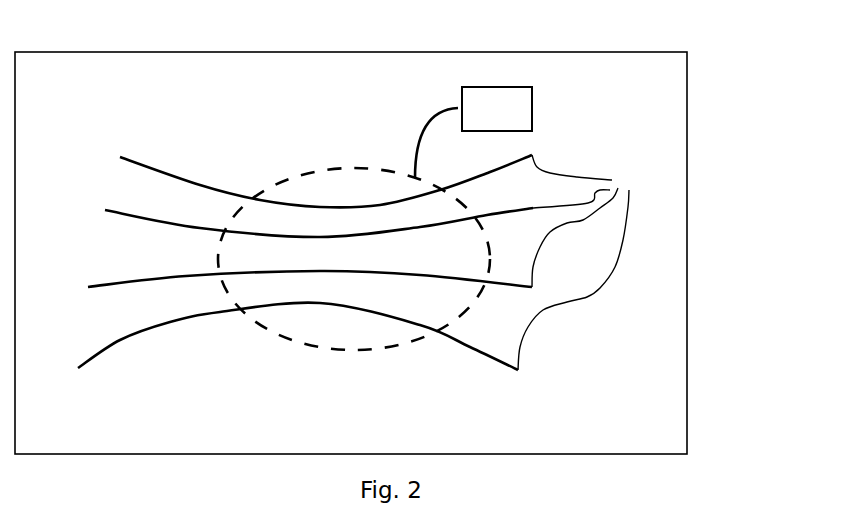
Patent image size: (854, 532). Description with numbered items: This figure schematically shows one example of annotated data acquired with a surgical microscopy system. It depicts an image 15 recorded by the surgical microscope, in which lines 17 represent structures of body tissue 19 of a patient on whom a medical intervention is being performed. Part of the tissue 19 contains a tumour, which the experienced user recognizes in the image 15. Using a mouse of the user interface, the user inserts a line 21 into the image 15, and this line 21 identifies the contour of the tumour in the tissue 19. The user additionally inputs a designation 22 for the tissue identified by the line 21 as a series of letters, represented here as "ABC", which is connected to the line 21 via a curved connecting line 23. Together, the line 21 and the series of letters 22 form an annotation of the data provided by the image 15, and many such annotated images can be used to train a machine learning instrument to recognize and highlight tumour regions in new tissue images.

The image 15 is at (687, 153).
The lines 17 is at (358, 262).
The body tissue 19 is at (158, 430).
The line 21 is at (293, 340).
The designation 22 is at (516, 87).
The curved connecting line 23 is at (462, 107).